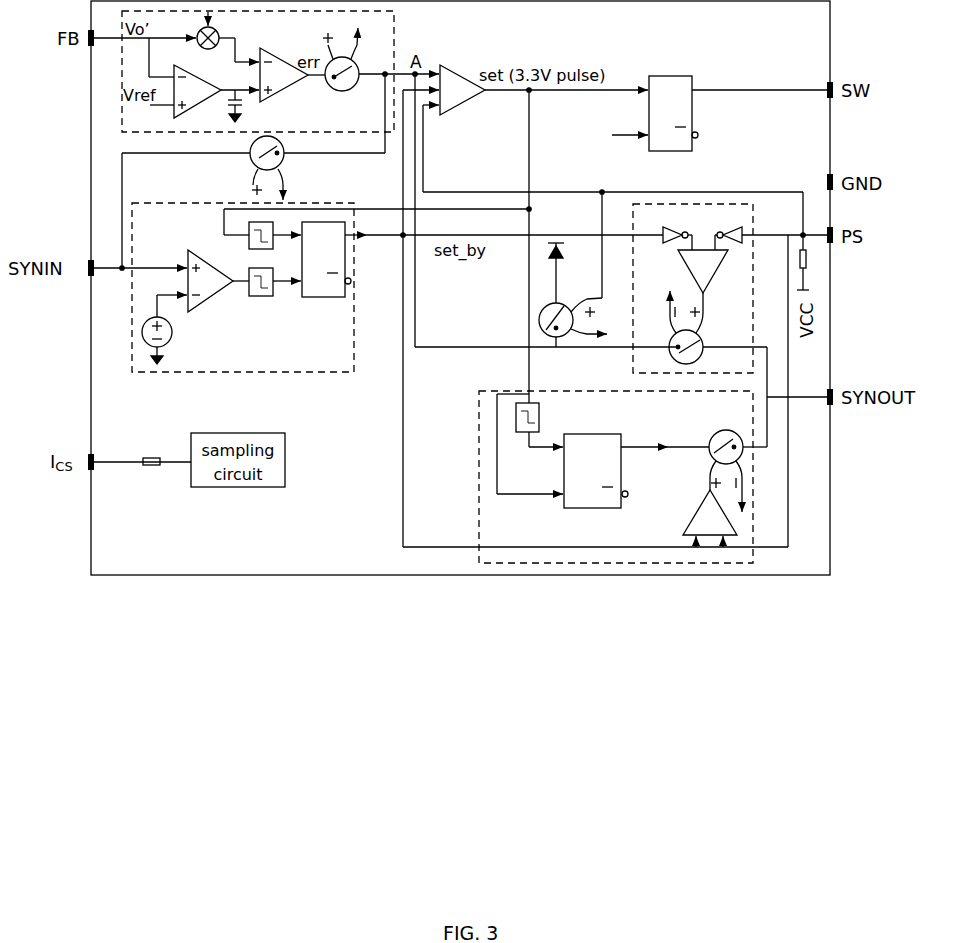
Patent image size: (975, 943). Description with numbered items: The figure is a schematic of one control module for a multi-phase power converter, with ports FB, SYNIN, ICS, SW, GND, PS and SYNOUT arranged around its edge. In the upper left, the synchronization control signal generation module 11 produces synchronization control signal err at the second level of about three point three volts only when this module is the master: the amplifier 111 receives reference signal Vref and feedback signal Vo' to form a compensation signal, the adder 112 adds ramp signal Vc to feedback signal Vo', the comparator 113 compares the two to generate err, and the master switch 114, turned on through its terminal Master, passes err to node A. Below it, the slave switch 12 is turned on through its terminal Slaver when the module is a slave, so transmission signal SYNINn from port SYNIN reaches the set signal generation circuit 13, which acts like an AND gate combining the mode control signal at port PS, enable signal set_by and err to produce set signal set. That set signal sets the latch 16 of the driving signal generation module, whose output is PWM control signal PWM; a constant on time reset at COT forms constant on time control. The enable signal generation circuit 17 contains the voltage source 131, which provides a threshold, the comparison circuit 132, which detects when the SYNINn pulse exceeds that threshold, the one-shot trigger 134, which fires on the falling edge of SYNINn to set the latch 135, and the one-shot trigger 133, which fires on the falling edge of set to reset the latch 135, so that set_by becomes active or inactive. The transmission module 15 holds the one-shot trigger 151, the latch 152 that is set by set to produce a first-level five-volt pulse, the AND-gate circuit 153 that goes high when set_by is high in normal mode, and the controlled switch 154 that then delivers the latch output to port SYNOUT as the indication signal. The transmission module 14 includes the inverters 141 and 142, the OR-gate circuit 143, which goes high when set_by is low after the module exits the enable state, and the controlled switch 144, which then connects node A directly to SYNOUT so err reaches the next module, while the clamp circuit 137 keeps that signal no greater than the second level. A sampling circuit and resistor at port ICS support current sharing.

The synchronization control signal generation module 11 is at (394, 35).
The slave switch 12 is at (253, 168).
The set signal generation circuit 13 is at (462, 90).
The transmission module 14 is at (693, 288).
The transmission module 15 is at (753, 554).
The latch 16 is at (693, 152).
The enable signal generation circuit 17 is at (352, 372).
The amplifier 111 is at (200, 104).
The adder 112 is at (210, 49).
The comparator 113 is at (284, 98).
The master switch 114 is at (341, 91).
The voltage source 131 is at (172, 331).
The comparison circuit 132 is at (187, 255).
The one-shot trigger 133 is at (248, 244).
The one-shot trigger 134 is at (258, 296).
The latch 135 is at (328, 298).
The clamp circuit 137 is at (560, 303).
The inverter 141 is at (674, 229).
The inverter 142 is at (766, 229).
The OR-gate circuit 143 is at (686, 276).
The controlled switch 144 is at (699, 340).
The one-shot trigger 151 is at (540, 425).
The latch 152 is at (590, 523).
The AND-gate circuit 153 is at (694, 522).
The controlled switch 154 is at (728, 415).